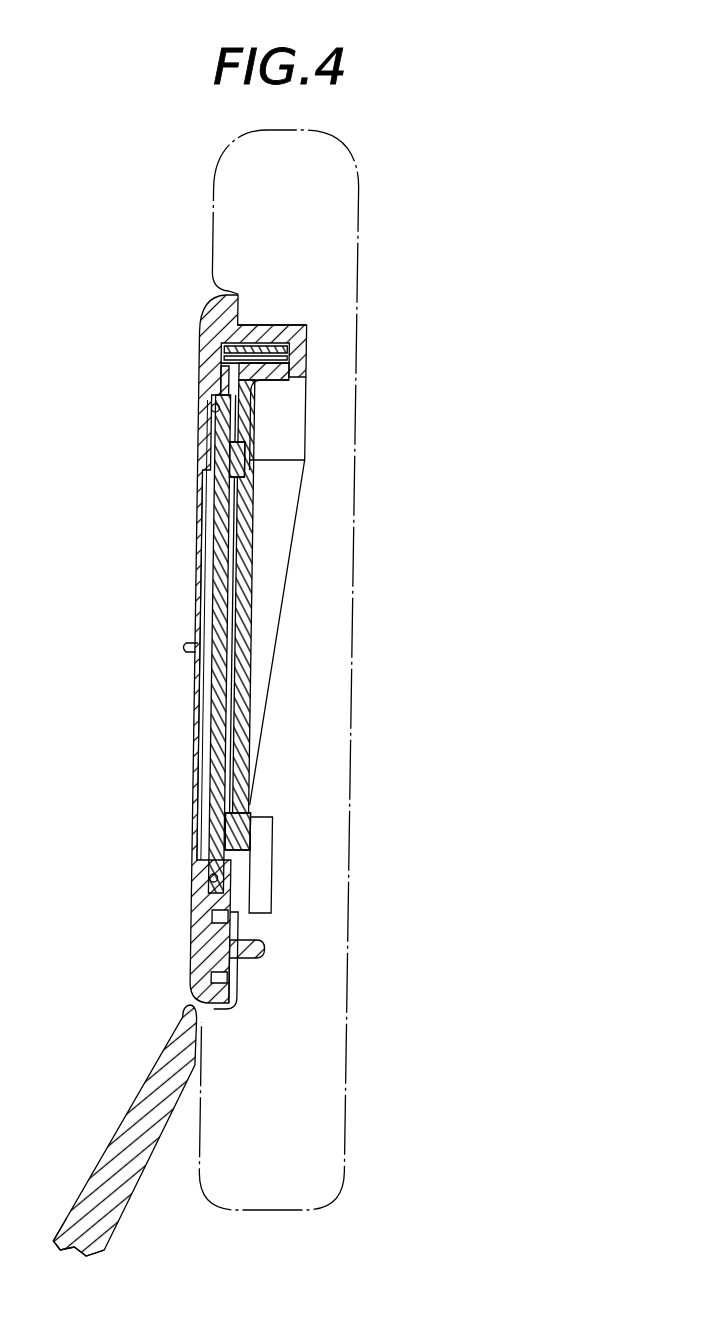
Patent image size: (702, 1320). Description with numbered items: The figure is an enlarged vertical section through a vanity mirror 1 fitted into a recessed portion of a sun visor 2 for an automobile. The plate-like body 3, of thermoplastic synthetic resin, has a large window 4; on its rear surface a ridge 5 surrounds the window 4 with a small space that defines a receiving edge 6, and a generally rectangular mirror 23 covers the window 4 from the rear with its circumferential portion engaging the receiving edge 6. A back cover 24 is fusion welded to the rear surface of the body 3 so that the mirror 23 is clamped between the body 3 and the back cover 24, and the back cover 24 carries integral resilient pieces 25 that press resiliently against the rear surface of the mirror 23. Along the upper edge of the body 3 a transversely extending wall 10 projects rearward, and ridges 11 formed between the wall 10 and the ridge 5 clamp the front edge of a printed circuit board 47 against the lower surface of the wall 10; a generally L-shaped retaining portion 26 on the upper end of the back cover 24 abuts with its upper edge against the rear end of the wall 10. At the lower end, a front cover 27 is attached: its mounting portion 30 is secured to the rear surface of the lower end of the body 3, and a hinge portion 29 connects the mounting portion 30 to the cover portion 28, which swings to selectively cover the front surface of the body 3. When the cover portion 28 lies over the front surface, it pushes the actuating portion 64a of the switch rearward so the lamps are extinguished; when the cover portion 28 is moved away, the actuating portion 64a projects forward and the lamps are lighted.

The vanity mirror 1 is at (178, 259).
The sun visor 2 is at (358, 197).
The body 3 is at (205, 945).
The window 4 is at (203, 437).
The ridge 5 is at (272, 902).
The receiving edge 6 is at (212, 405).
The wall 10 is at (282, 326).
The ridges 11 is at (204, 372).
The mirror 23 is at (219, 500).
The back cover 24 is at (246, 525).
The resilient pieces 25 is at (250, 467).
The retaining portion 26 is at (310, 348).
The front cover 27 is at (134, 1126).
The cover portion 28 is at (133, 1222).
The hinge portion 29 is at (215, 1017).
The mounting portion 30 is at (242, 996).
The printed circuit board 47 is at (292, 394).
The actuating portion 64a is at (197, 648).